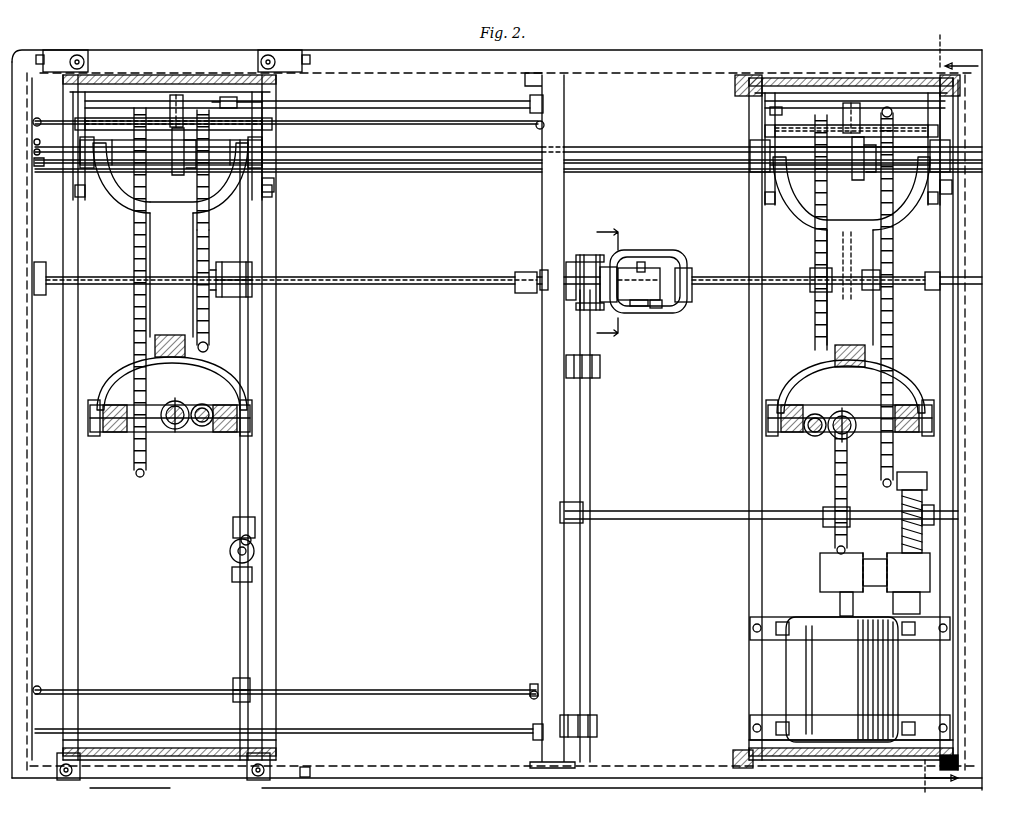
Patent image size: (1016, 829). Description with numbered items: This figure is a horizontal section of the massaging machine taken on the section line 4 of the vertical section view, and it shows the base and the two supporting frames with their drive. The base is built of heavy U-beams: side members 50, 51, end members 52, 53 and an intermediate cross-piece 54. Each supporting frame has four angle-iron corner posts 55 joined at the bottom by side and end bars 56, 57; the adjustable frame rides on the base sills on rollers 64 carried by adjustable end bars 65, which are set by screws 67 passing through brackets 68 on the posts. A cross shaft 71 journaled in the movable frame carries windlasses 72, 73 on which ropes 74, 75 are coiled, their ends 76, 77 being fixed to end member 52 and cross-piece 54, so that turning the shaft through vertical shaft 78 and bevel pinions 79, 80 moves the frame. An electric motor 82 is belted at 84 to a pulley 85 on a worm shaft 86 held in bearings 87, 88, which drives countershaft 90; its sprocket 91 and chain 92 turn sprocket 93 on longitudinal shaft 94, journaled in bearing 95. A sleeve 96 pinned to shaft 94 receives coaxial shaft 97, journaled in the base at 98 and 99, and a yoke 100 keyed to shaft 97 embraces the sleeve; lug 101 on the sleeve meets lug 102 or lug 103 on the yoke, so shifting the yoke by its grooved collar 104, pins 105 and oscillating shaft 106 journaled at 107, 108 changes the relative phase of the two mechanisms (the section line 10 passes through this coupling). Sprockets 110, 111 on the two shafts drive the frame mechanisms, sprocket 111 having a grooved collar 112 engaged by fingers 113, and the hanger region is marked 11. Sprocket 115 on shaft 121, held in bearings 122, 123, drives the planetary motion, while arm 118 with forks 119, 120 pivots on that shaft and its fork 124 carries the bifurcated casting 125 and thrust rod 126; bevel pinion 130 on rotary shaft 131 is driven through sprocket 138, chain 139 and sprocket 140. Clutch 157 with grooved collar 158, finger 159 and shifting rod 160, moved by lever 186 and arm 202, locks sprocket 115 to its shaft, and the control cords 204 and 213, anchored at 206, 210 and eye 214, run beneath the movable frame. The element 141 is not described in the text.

The section line 4— 4 is at (951, 413).
The section line 10— 10 is at (609, 281).
The section line 11 is at (220, 322).
The side member 50 is at (656, 73).
The side member 51 is at (657, 770).
The end member 52 is at (25, 393).
The end member 53 is at (970, 410).
The cross-piece 54 is at (540, 358).
The corner post 55 is at (76, 52).
The side bar 56 is at (276, 472).
The end bar 57 is at (132, 745).
The roller 64 is at (38, 55).
The adjustable end bar 65 is at (172, 75).
The screw 67 is at (86, 58).
The bracket 68 is at (82, 52).
The cross shaft 71 is at (240, 468).
The spool or windlass 72 is at (272, 141).
The spool or windlass 73 is at (236, 678).
The rope or wire 74 is at (418, 147).
The rope or wire 75 is at (206, 694).
The rope end connection 76 is at (40, 122).
The rope end connection 77 is at (537, 128).
The vertical shaft 78 is at (230, 554).
The bevel pinion 79 is at (240, 540).
The bevel pinion 80 is at (232, 575).
The electric motor 82 is at (842, 679).
The belt 84 is at (840, 596).
The pulley 85 is at (930, 561).
The worm shaft 86 is at (900, 546).
The bearing 87 is at (905, 472).
The bearing 88 is at (893, 606).
The countershaft 90 is at (668, 510).
The sprocket wheel 91 is at (836, 549).
The sprocket chain 92 is at (835, 479).
The sprocket wheel 93 is at (847, 255).
The longitudinal shaft 94 is at (710, 277).
The bearing 95 is at (942, 283).
The sleeve 96 is at (647, 306).
The coaxial shaft 97 is at (478, 287).
The bearing 98 is at (41, 262).
The bearing 99 is at (540, 270).
The yoke 100 is at (670, 252).
The lug 101 is at (643, 268).
The lug 102 is at (640, 262).
The lug 103 is at (660, 308).
The grooved collar 104 is at (596, 256).
The pin 105 is at (576, 284).
The oscillating shaft 106 is at (592, 438).
The bearing 107 is at (600, 372).
The bearing 108 is at (596, 718).
The sprocket 110 is at (810, 278).
The sprocket 111 is at (210, 265).
The grooved collar 112 is at (252, 281).
The finger 113 is at (250, 262).
The sprocket 115 is at (203, 110).
The arm 118 is at (882, 280).
The fork 119 is at (118, 206).
The fork 120 is at (274, 183).
The shaft 121 is at (156, 208).
The bearing 122 is at (750, 150).
The bearing 123 is at (950, 152).
The yoke or fork 124 is at (232, 376).
The bifurcated casting 125 is at (107, 405).
The thrust rod 126 is at (204, 427).
The bevel pinion 130 is at (178, 402).
The rotary shaft 131 is at (174, 431).
The sprocket 138 is at (140, 478).
The chain 139 is at (134, 323).
The sprocket 140 is at (148, 96).
The box 141 is at (170, 335).
The one-way clutch 157 is at (180, 166).
The grooved collar 158 is at (172, 134).
The finger 159 is at (182, 97).
The shifting rod 160 is at (122, 100).
The lever 186 is at (228, 96).
The arm 202 is at (777, 105).
The wire or cable 204 is at (662, 168).
The cable attachment 206 is at (34, 142).
The cord attachment 210 is at (36, 156).
The cord 213 is at (606, 158).
The eye 214 is at (38, 168).